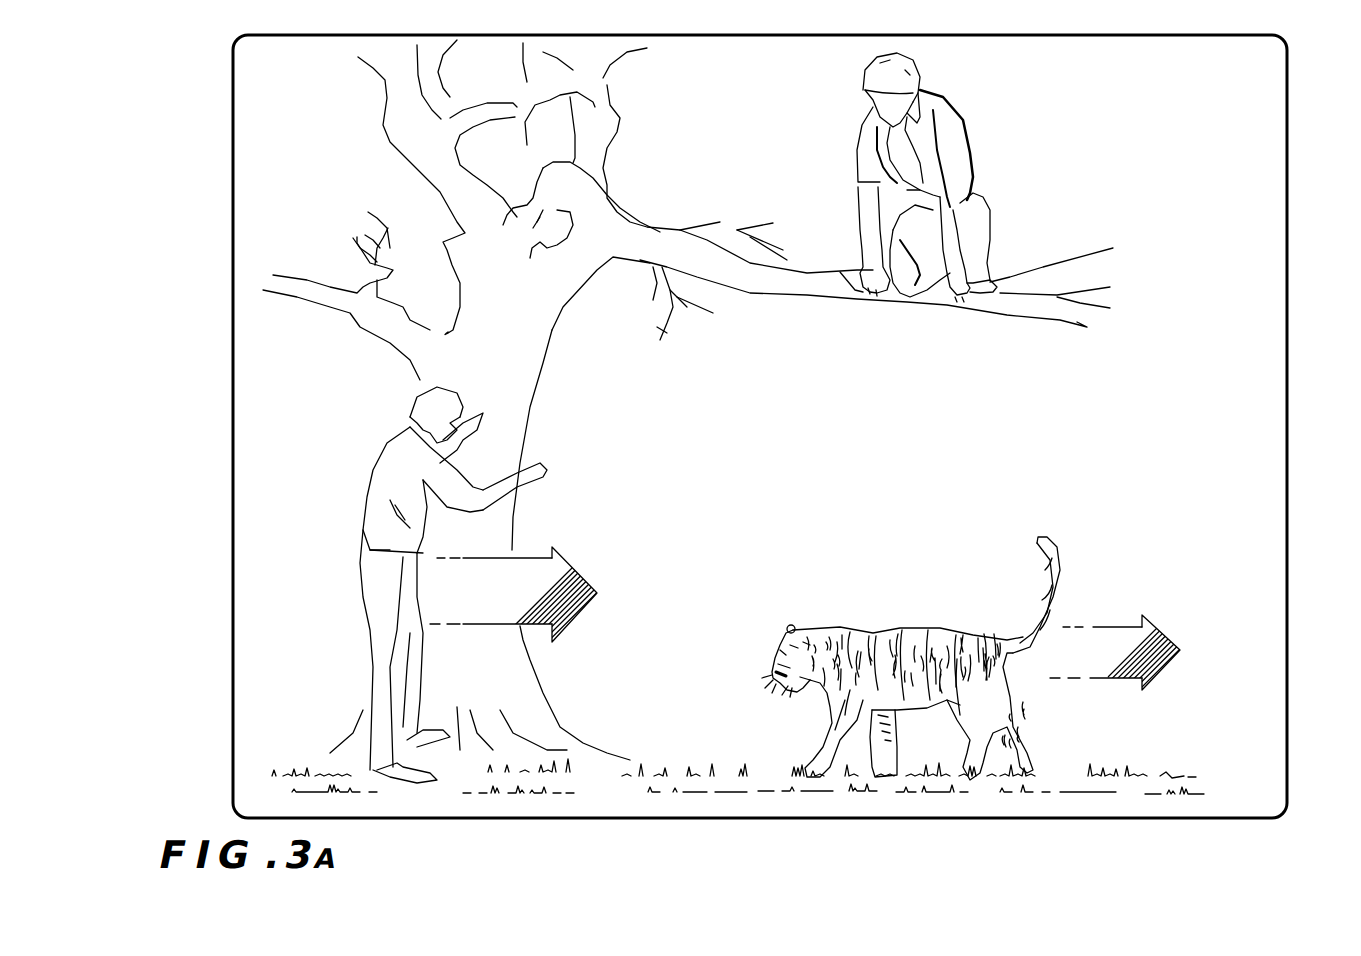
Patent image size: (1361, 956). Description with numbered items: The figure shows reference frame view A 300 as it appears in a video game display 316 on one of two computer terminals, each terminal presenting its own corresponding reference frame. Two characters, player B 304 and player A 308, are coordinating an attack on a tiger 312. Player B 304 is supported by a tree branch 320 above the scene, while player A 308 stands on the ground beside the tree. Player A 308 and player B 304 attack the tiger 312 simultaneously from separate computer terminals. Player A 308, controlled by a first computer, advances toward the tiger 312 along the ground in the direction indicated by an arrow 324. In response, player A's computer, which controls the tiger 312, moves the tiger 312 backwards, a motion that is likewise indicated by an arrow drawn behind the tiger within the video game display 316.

The reference frame view A 300 is at (210, 390).
The player B 304 is at (960, 148).
The player A 308 is at (382, 486).
The tiger 312 is at (897, 625).
The video game display 316 is at (1270, 192).
The tree branch 320 is at (752, 285).
The arrow 324 is at (558, 580).